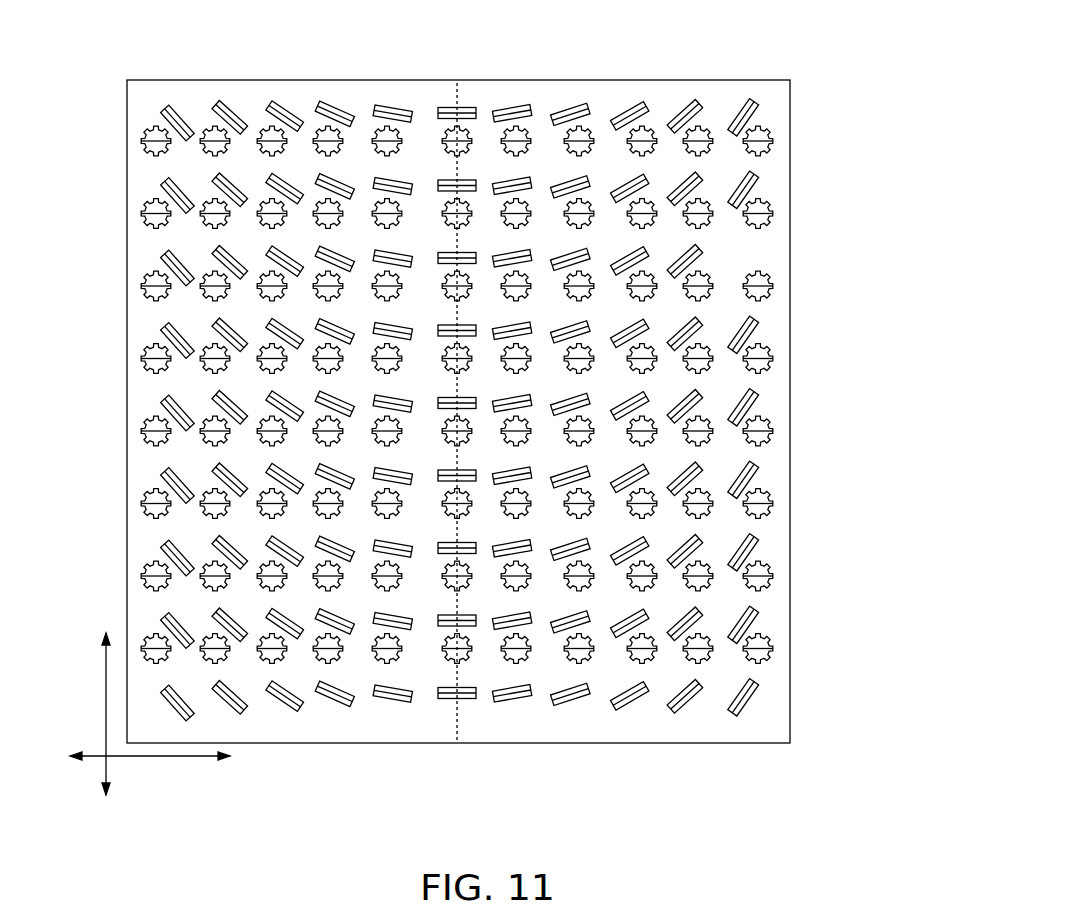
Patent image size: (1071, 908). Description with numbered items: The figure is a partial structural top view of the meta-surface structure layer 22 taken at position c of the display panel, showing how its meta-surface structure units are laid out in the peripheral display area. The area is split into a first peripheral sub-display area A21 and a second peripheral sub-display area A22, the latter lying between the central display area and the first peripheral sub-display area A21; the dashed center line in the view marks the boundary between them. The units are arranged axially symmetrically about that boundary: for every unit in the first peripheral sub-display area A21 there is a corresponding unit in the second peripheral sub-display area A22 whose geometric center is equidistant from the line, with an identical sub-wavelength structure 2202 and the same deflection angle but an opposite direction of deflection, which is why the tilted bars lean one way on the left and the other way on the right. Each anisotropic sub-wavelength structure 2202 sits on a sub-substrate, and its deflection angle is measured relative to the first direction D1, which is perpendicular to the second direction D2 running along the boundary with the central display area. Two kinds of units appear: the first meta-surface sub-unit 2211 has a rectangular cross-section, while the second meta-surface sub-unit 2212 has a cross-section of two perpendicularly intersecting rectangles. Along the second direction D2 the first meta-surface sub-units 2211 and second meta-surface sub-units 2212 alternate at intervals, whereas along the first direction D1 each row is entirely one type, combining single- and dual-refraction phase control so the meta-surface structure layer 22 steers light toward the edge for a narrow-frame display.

The position C c is at (138, 67).
The first peripheral sub-display area A21 is at (788, 98).
The second peripheral sub-display area A22 is at (455, 100).
The anisotropic sub-wavelength structure 2202 is at (829, 407).
The second meta-surface sub-unit 2212 is at (836, 291).
The first meta-surface sub-unit 2211 is at (829, 350).
The meta-surface structure layer 22 is at (755, 468).
The first direction D1 is at (172, 766).
The second direction D2 is at (102, 733).